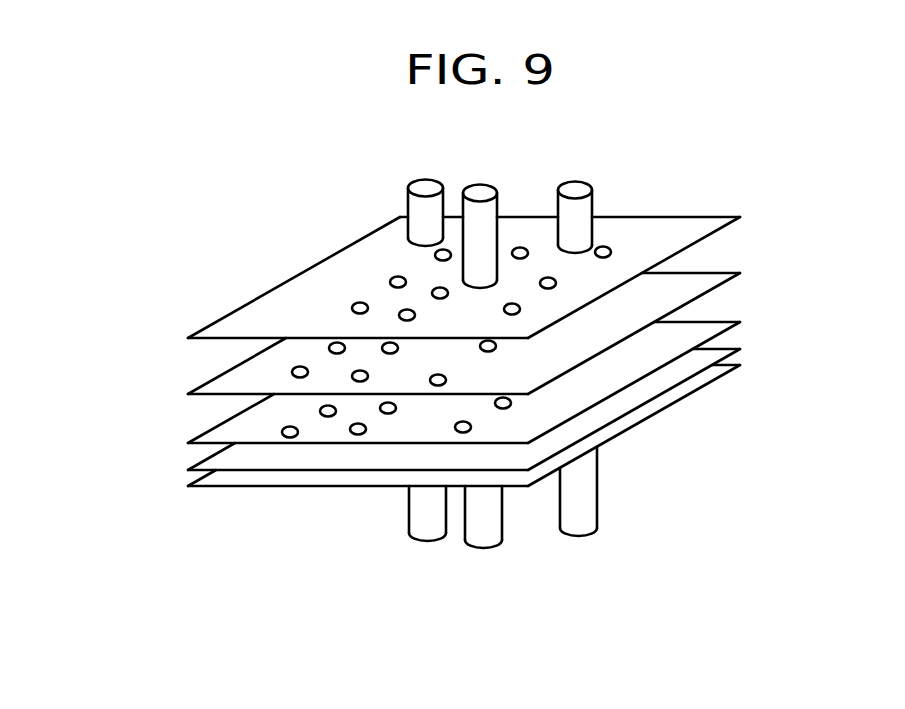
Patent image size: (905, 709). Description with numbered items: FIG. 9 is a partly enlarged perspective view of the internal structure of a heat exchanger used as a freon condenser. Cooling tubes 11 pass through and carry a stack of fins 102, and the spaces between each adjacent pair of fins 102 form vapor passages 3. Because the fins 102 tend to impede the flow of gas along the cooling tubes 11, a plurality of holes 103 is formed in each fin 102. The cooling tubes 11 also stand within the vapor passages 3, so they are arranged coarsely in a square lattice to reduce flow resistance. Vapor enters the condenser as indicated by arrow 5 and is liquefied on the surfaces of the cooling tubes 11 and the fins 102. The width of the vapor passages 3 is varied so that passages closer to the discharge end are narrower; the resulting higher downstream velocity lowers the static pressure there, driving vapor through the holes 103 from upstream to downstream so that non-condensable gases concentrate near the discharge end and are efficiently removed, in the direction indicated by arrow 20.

The arrows 5 is at (192, 572).
The fins 102 is at (305, 272).
The holes 103 is at (399, 315).
The vapor passages 3 is at (212, 365).
The cooling tubes 11 is at (418, 181).
The flow direction arrow 20 is at (480, 578).